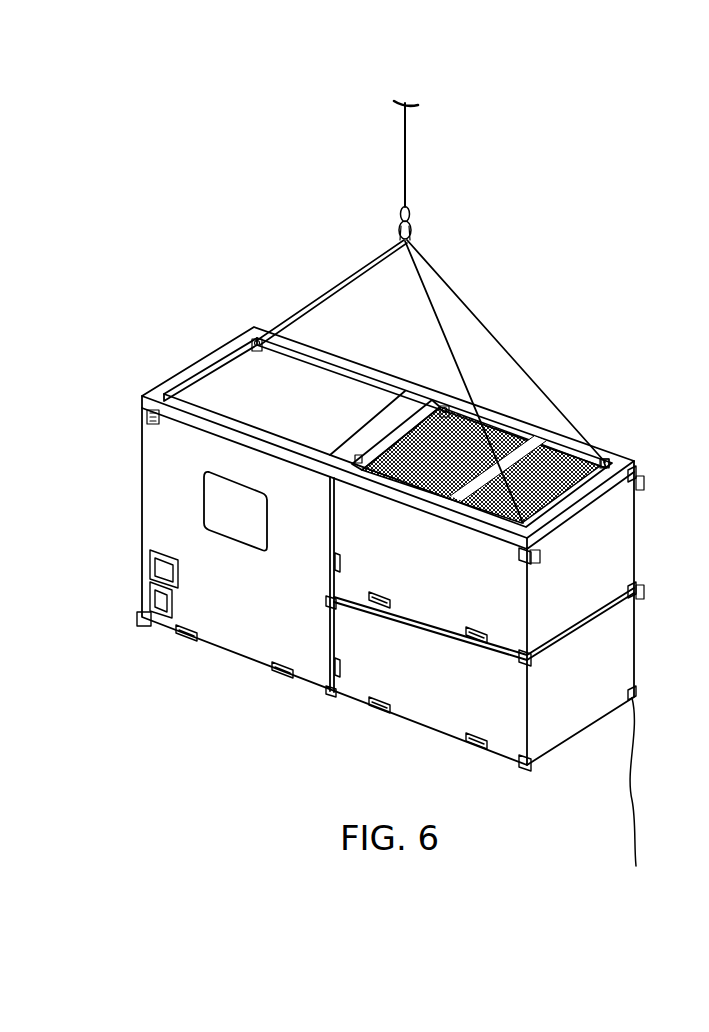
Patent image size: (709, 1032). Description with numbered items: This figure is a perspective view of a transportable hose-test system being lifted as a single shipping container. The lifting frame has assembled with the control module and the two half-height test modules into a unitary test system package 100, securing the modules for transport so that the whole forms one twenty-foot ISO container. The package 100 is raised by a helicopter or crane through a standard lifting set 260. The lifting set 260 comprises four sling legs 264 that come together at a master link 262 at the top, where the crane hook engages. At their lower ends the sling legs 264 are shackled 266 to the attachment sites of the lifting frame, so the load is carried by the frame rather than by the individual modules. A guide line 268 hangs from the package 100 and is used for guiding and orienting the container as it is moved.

The test system package 100 is at (131, 368).
The lifting set 260 is at (432, 210).
The master link 262 is at (402, 226).
The sling legs 264 is at (505, 347).
The shackle 266 is at (610, 456).
The guide line 268 is at (636, 776).